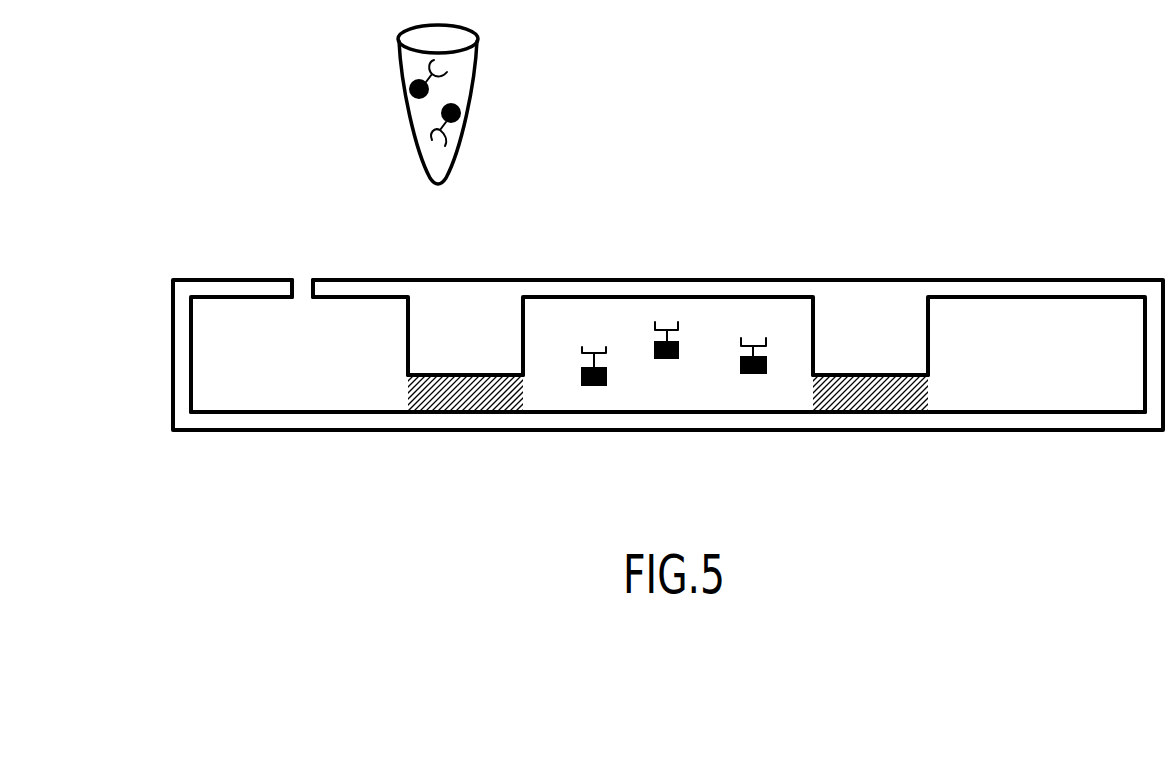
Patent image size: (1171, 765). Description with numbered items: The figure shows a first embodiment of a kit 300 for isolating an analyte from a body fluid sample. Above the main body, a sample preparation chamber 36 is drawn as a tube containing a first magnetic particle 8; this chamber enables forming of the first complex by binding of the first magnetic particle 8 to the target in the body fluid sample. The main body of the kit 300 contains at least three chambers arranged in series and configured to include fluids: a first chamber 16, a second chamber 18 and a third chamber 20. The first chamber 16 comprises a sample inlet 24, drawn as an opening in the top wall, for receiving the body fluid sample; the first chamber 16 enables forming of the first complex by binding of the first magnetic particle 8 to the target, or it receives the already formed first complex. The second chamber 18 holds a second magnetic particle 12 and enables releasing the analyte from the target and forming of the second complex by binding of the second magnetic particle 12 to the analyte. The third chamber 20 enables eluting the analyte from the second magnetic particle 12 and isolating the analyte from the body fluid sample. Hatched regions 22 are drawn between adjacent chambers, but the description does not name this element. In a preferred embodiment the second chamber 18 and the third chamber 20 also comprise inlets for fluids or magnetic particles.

The kit 300 is at (254, 100).
The first magnetic particle 8 is at (403, 81).
The sample preparation chamber 36 is at (463, 78).
The sample inlet 24 is at (302, 292).
The first chamber 16 is at (284, 398).
The filter / porous region 22 is at (460, 398).
The second chamber 18 is at (561, 397).
The third chamber 20 is at (1012, 398).
The second magnetic particle 12 is at (667, 360).